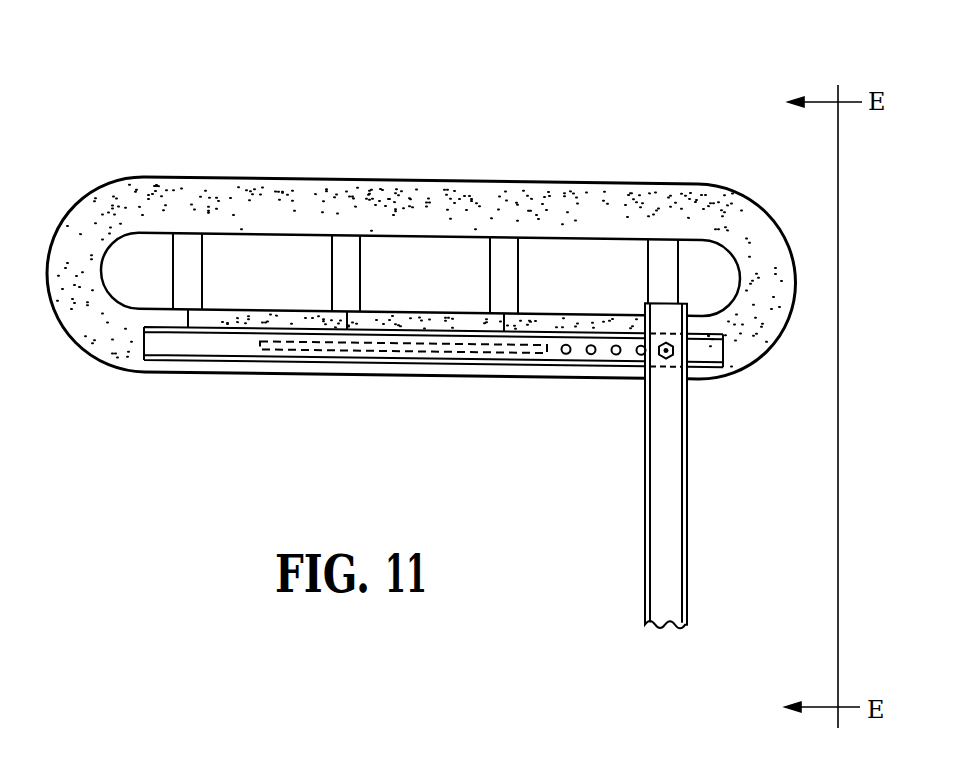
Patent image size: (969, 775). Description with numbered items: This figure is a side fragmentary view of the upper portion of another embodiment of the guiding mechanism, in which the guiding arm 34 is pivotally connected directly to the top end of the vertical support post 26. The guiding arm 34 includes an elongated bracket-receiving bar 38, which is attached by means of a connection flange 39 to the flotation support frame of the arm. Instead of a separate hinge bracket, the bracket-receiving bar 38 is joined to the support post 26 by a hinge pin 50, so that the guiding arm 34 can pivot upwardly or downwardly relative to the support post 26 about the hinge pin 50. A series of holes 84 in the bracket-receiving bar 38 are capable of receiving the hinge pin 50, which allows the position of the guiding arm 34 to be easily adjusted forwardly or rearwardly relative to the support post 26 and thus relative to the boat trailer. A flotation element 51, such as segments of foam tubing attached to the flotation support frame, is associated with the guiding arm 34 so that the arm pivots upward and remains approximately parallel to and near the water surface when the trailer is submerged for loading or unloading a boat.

The guiding arm 34 is at (323, 133).
The flotation element 51 is at (98, 332).
The bracket-receiving bar 38 is at (243, 345).
The connection flange 39 is at (400, 352).
The holes 84 is at (591, 355).
The hinge pin 50 is at (668, 357).
The support post 26 is at (668, 578).